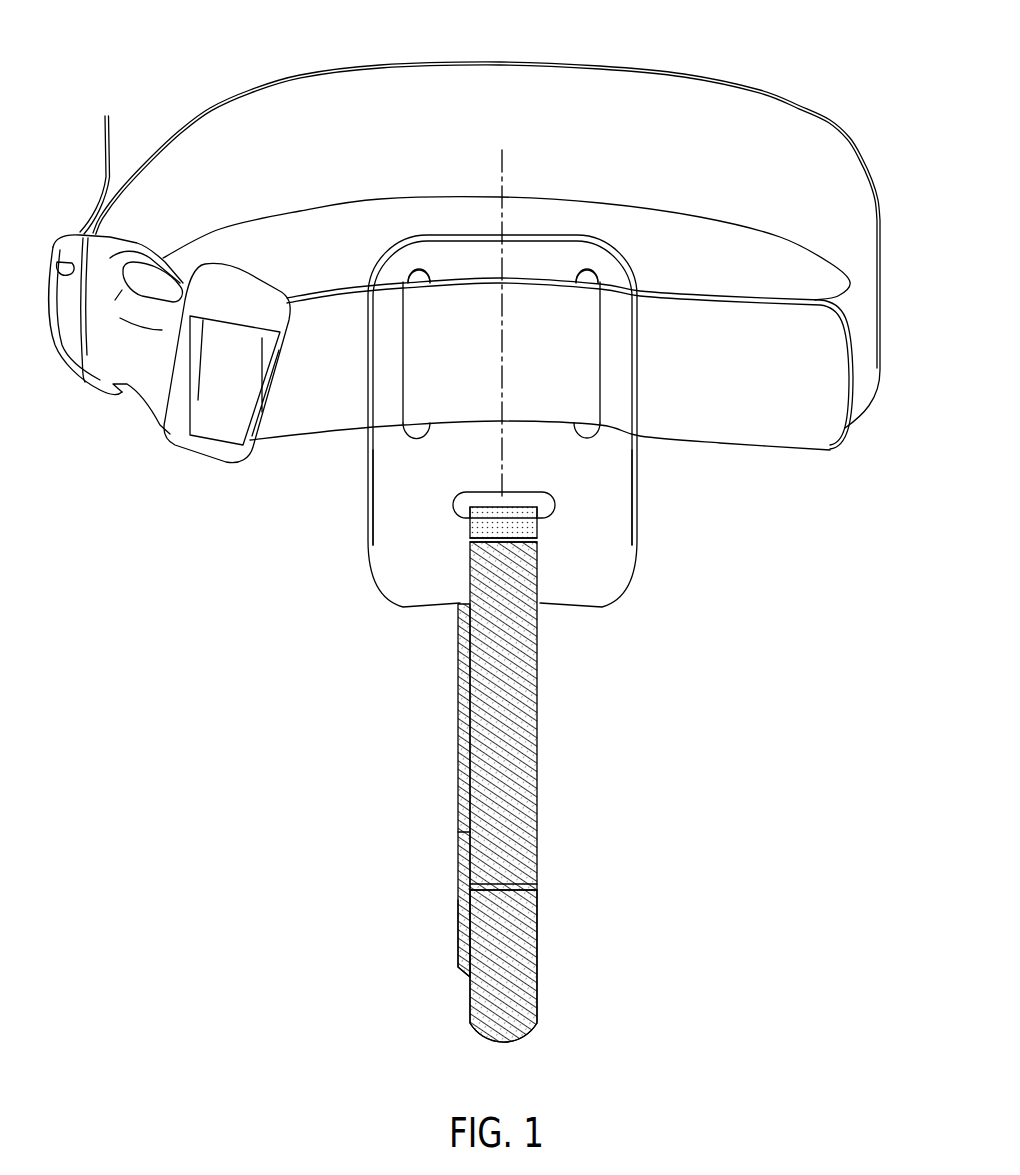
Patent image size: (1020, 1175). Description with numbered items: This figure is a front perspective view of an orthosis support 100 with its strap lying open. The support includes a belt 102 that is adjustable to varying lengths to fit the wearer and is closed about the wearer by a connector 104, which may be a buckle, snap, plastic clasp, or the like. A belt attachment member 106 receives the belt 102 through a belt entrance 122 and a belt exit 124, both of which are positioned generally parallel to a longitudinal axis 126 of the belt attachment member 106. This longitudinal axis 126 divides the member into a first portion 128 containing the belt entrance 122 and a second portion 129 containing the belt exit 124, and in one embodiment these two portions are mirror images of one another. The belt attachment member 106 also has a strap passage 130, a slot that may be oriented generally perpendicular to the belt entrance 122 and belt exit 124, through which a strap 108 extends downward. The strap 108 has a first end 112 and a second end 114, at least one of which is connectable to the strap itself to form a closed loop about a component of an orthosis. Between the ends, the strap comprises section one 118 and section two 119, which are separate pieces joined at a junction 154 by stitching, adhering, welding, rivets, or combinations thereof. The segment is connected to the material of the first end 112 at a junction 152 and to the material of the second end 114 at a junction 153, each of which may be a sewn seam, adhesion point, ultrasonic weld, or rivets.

The orthosis support 100 is at (734, 61).
The belt 102 is at (735, 318).
The connector 104 is at (185, 445).
The belt attachment member 106 is at (530, 250).
The strap 108 is at (556, 751).
The first end 112 is at (537, 960).
The second end 114 is at (458, 918).
The section one 118 is at (530, 668).
The section two 119 is at (458, 680).
The belt entrance 122 is at (592, 278).
The belt exit 124 is at (420, 278).
The longitudinal axis 126 is at (502, 157).
The first portion 128 is at (615, 484).
The second portion 129 is at (426, 484).
The strap passage 130 is at (458, 508).
The junction 152 is at (537, 888).
The junction 153 is at (458, 832).
The junction 154 is at (537, 540).